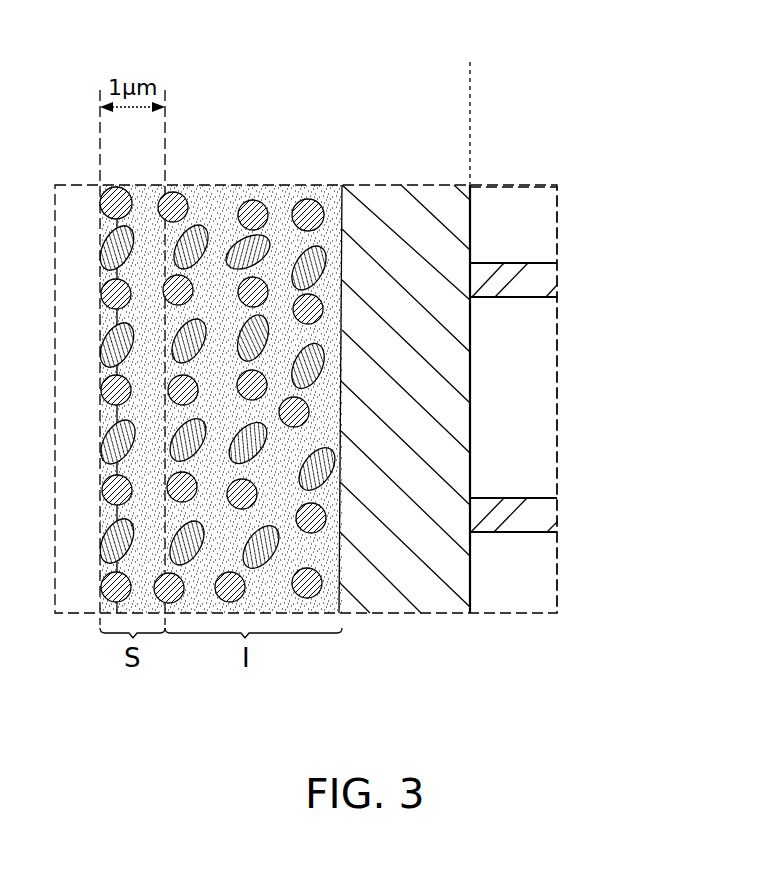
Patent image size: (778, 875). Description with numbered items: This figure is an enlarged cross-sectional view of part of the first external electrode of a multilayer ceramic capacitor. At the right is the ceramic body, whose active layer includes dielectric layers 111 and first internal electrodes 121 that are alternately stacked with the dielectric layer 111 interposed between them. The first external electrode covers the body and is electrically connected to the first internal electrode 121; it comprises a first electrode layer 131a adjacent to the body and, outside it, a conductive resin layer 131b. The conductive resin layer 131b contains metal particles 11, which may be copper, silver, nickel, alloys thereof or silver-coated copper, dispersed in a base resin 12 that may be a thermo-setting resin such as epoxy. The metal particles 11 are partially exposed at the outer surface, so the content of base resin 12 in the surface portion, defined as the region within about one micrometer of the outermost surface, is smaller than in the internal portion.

The metal particles 11 is at (251, 200).
The base resin 12 is at (292, 198).
The dielectric layer 111 is at (510, 204).
The first internal electrode 121 is at (546, 276).
The first electrode layer 131a is at (470, 63).
The conductive resin layer 131b is at (338, 63).